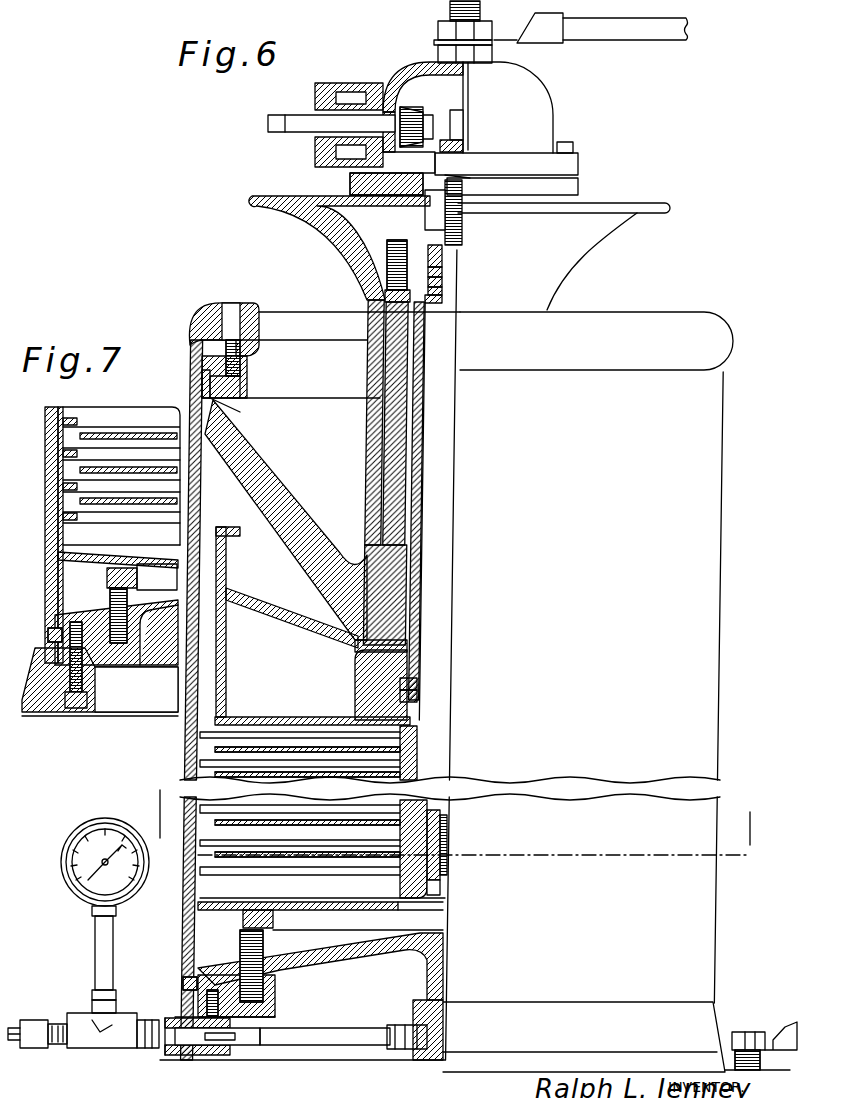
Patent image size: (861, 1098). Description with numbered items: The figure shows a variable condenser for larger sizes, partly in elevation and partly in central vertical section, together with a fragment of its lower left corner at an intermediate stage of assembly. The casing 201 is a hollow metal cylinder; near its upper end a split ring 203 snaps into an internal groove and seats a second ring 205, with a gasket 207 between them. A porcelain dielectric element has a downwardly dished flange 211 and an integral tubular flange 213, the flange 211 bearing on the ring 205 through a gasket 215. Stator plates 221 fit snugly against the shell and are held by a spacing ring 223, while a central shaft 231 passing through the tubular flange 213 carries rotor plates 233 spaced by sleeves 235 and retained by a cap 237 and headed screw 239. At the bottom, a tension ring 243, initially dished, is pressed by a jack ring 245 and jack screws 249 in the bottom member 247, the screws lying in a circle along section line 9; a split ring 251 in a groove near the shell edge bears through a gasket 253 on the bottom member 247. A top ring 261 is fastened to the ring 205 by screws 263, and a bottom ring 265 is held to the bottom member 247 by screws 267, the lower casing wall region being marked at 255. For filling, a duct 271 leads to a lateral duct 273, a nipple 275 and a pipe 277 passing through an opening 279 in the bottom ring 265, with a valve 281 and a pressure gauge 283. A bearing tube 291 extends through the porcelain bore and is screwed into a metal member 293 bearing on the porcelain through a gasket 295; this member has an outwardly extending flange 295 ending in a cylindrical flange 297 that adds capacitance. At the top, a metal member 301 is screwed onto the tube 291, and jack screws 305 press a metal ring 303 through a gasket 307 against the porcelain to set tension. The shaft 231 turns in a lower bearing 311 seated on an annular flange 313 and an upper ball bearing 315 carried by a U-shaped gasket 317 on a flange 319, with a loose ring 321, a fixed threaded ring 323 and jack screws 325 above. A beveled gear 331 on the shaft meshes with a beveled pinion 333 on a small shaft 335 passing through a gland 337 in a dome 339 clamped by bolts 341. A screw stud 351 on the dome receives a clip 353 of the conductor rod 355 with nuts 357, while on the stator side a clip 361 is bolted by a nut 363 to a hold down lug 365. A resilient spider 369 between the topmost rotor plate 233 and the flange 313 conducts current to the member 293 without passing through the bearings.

In FIG. 6, the section line 9- 9 is at (464, 829).
In FIG. 6, the casing 201 is at (190, 746).
In FIG. 7, the casing 201 is at (50, 408).
In FIG. 6, the split ring 203 is at (208, 377).
In FIG. 6, the ring 205 is at (242, 394).
In FIG. 6, the gasket 207 is at (215, 394).
In FIG. 6, the flange 211 is at (266, 472).
In FIG. 6, the tubular flange 213 is at (382, 418).
In FIG. 6, the gasket 215 is at (232, 404).
In FIG. 6, the stator plates 221 is at (212, 760).
In FIG. 7, the stator plates 221 is at (64, 430).
In FIG. 6, the spacing ring 223 is at (205, 498).
In FIG. 6, the central shaft 231 is at (446, 645).
In FIG. 6, the rotor plates 233 is at (412, 737).
In FIG. 7, the rotor plates 233 is at (162, 508).
In FIG. 6, the spacing sleeves 235 is at (418, 764).
In FIG. 6, the cap 237 is at (400, 884).
In FIG. 6, the headed screw 239 is at (452, 888).
In FIG. 6, the tension ring 243 is at (238, 907).
In FIG. 7, the tension ring 243 is at (108, 562).
In FIG. 6, the jack ring 245 is at (276, 916).
In FIG. 7, the jack ring 245 is at (140, 582).
In FIG. 6, the bottom member 247 is at (366, 947).
In FIG. 7, the bottom member 247 is at (170, 612).
In FIG. 6, the jack screws 249 is at (262, 1005).
In FIG. 7, the jack screws 249 is at (125, 670).
In FIG. 6, the split ring 251 is at (183, 984).
In FIG. 7, the split ring 251 is at (48, 636).
In FIG. 6, the gasket 253 is at (198, 977).
In FIG. 7, the gasket 253 is at (62, 622).
In FIG. 6, the casing wall 255 is at (190, 880).
In FIG. 7, the casing wall 255 is at (88, 508).
In FIG. 6, the top ring 261 is at (210, 312).
In FIG. 6, the screws 263 is at (232, 312).
In FIG. 6, the bottom ring 265 is at (177, 1006).
In FIG. 7, the bottom ring 265 is at (42, 712).
In FIG. 6, the screws 267 is at (205, 1013).
In FIG. 7, the screws 267 is at (86, 696).
In FIG. 6, the duct 271 is at (441, 966).
In FIG. 6, the lateral duct 273 is at (438, 1052).
In FIG. 6, the nipple 275 is at (396, 1056).
In FIG. 6, the pipe 277 is at (295, 1042).
In FIG. 6, the opening 279 is at (180, 1057).
In FIG. 6, the valve 281 is at (35, 1050).
In FIG. 6, the pressure gauge 283 is at (86, 894).
In FIG. 6, the bearing tube 291 is at (407, 512).
In FIG. 6, the metal member 293 is at (356, 665).
In FIG. 6, the outwardly extending flange 295 is at (297, 622).
In FIG. 6, the cylindrical flange 297 is at (230, 562).
In FIG. 6, the metal member 301 is at (562, 276).
In FIG. 6, the metal ring 303 is at (384, 301).
In FIG. 6, the jack screws 305 is at (398, 244).
In FIG. 6, the gasket 307 is at (384, 313).
In FIG. 6, the lower bearing 311 is at (418, 700).
In FIG. 6, the annular flange 313 is at (442, 716).
In FIG. 6, the upper ball bearing 315 is at (455, 272).
In FIG. 6, the sealing gasket 317 is at (448, 286).
In FIG. 6, the flange 319 is at (440, 300).
In FIG. 6, the ring 321 is at (462, 260).
In FIG. 6, the annular ring 323 is at (462, 232).
In FIG. 6, the jack screws 325 is at (462, 246).
In FIG. 6, the beveled gear 331 is at (451, 144).
In FIG. 6, the beveled pinion 333 is at (411, 112).
In FIG. 6, the small shaft 335 is at (300, 132).
In FIG. 6, the gland 337 is at (396, 96).
In FIG. 6, the dome 339 is at (536, 105).
In FIG. 6, the bolts 341 is at (571, 147).
In FIG. 6, the screw stud 351 is at (452, 13).
In FIG. 6, the clip 353 is at (548, 42).
In FIG. 6, the conductor rod 355 is at (670, 42).
In FIG. 6, the nuts 357 is at (480, 36).
In FIG. 6, the clip 361 is at (792, 1022).
In FIG. 6, the nut 363 is at (745, 1030).
In FIG. 6, the hold down lug 365 is at (770, 1068).
In FIG. 6, the resilient spider 369 is at (360, 716).